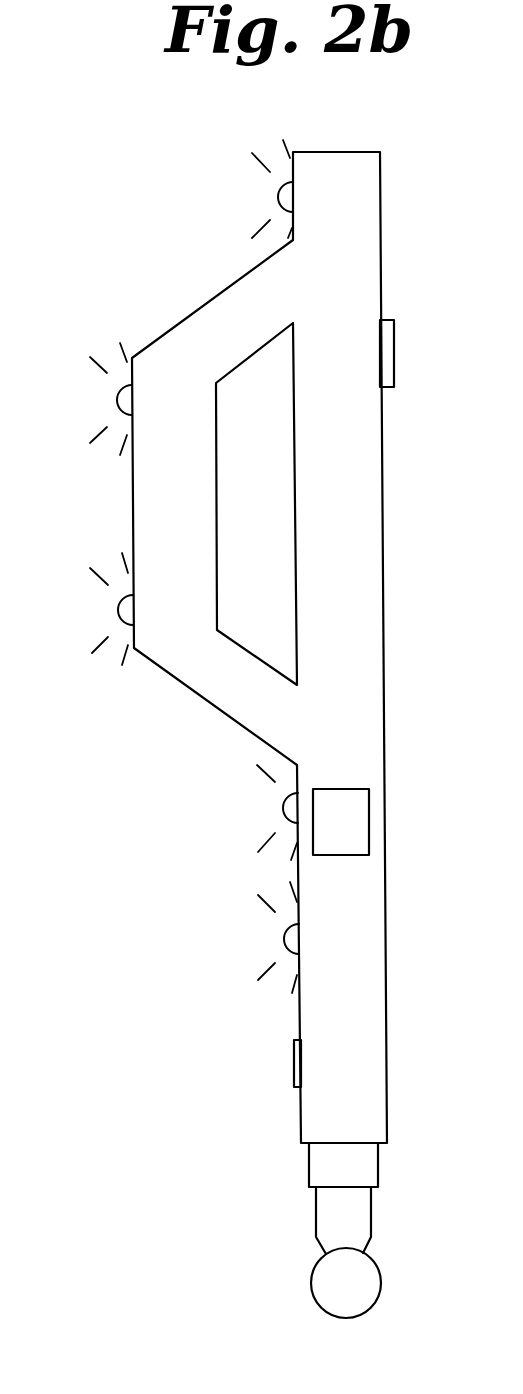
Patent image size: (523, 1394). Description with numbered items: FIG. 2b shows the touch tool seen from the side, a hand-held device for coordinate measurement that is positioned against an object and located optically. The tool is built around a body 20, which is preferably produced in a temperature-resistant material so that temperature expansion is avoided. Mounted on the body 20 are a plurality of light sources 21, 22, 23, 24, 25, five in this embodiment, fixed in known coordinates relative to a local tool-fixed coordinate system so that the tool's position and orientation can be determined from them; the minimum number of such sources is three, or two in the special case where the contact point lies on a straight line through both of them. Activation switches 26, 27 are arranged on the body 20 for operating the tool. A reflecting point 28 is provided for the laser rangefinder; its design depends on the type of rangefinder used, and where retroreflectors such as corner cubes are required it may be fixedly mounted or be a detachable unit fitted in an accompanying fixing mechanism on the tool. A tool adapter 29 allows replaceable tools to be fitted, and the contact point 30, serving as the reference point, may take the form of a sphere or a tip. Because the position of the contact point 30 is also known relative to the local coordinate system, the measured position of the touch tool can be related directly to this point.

The body 20 is at (352, 260).
The light source 21 is at (258, 197).
The light source 22 is at (97, 400).
The light source 23 is at (97, 610).
The light source 24 is at (263, 808).
The light source 25 is at (263, 939).
The activation switch 26 is at (386, 344).
The activation switch 27 is at (362, 821).
The reflecting point 28 is at (276, 1063).
The tool adapter 29 is at (314, 1162).
The contact point 30 is at (318, 1282).